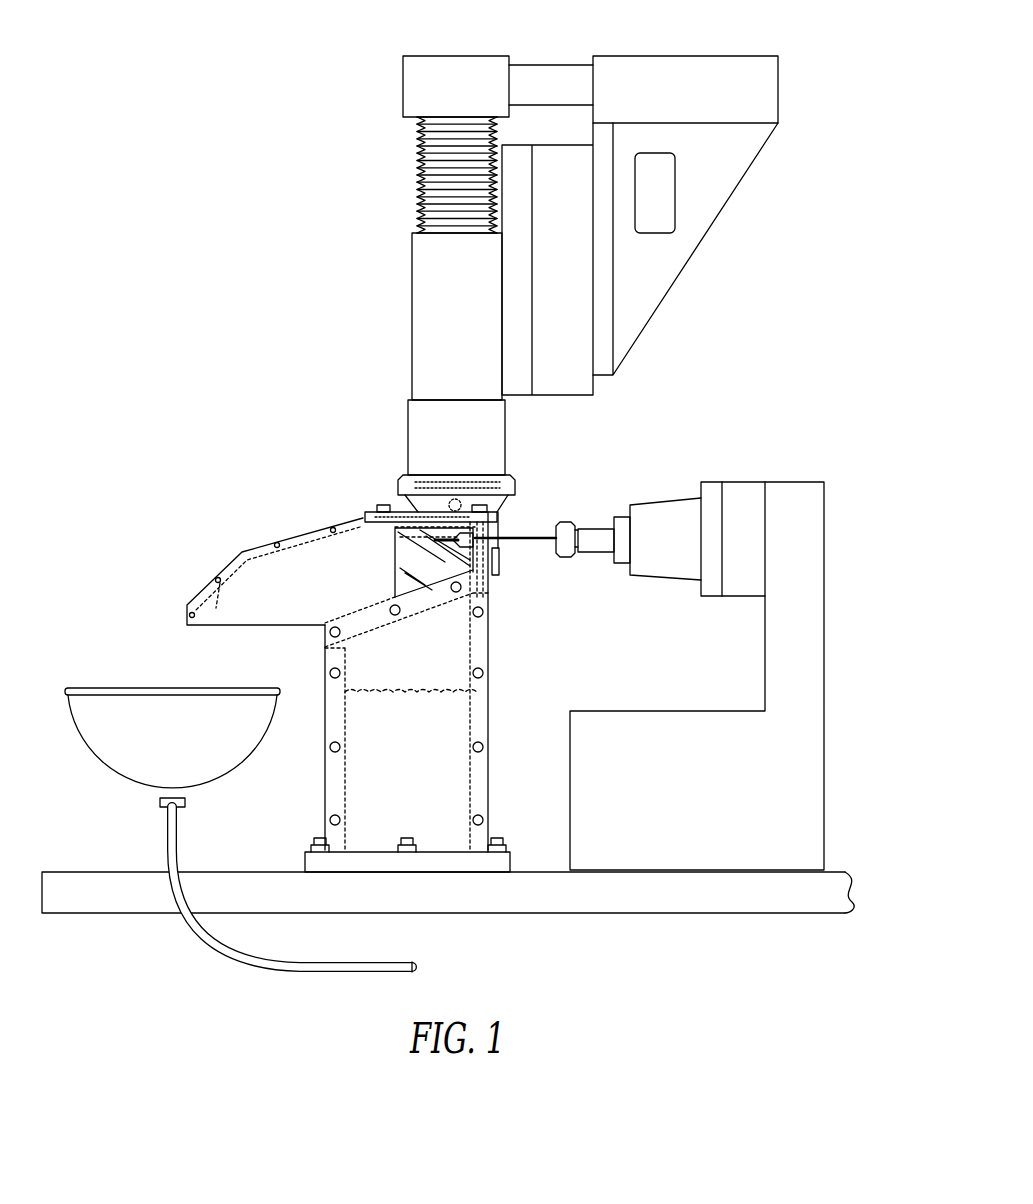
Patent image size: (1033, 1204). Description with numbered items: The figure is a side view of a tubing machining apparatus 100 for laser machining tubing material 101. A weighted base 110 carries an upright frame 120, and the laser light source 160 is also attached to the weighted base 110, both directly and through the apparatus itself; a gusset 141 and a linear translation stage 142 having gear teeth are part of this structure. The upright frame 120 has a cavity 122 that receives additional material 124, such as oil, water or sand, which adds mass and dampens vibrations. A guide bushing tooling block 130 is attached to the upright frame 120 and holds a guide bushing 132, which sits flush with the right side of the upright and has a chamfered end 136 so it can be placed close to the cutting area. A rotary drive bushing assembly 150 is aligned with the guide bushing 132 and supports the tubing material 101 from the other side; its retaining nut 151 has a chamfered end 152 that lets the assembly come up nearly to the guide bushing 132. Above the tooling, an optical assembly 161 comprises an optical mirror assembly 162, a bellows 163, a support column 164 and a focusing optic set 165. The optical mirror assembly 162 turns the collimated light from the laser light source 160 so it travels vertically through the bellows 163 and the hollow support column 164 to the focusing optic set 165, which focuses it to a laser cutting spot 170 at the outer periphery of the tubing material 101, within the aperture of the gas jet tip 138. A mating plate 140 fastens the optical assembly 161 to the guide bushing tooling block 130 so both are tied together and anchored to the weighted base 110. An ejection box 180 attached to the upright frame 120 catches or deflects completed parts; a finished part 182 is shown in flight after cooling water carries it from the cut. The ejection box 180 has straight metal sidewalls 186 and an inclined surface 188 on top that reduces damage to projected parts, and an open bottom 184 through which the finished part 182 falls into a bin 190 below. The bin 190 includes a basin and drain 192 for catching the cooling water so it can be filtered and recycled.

The tubing machining apparatus 100 is at (127, 47).
The tubing material 101 is at (528, 539).
The weighted base 110 is at (80, 872).
The upright frame 120 is at (492, 715).
The cavity 122 is at (355, 789).
The additional material 124 is at (460, 788).
The guide bushing tooling block 130 is at (485, 500).
The guide bushing 132 is at (500, 562).
The chamfered end 136 is at (460, 545).
The gas jet tip 138 is at (434, 539).
The mating plate 140 is at (408, 515).
The gusset 141 is at (707, 207).
The linear translation stage 142 is at (565, 143).
The rotary drive bushing assembly 150 is at (665, 498).
The retaining nut 151 is at (566, 520).
The chamfered end 152 is at (557, 555).
The laser light source 160 is at (689, 55).
The optical assembly 161 is at (343, 100).
The optical mirror assembly 162 is at (456, 55).
The bellows 163 is at (417, 170).
The support column 164 is at (413, 320).
The focusing optic set 165 is at (437, 483).
The laser cutting spot 170 is at (398, 560).
The ejection box 180 is at (252, 572).
The finished part 182 is at (213, 588).
The open bottom 184 is at (257, 627).
The sidewall 186 is at (330, 553).
The inclined surface 188 is at (260, 547).
The bin 190 is at (101, 772).
The basin and drain 192 is at (166, 832).